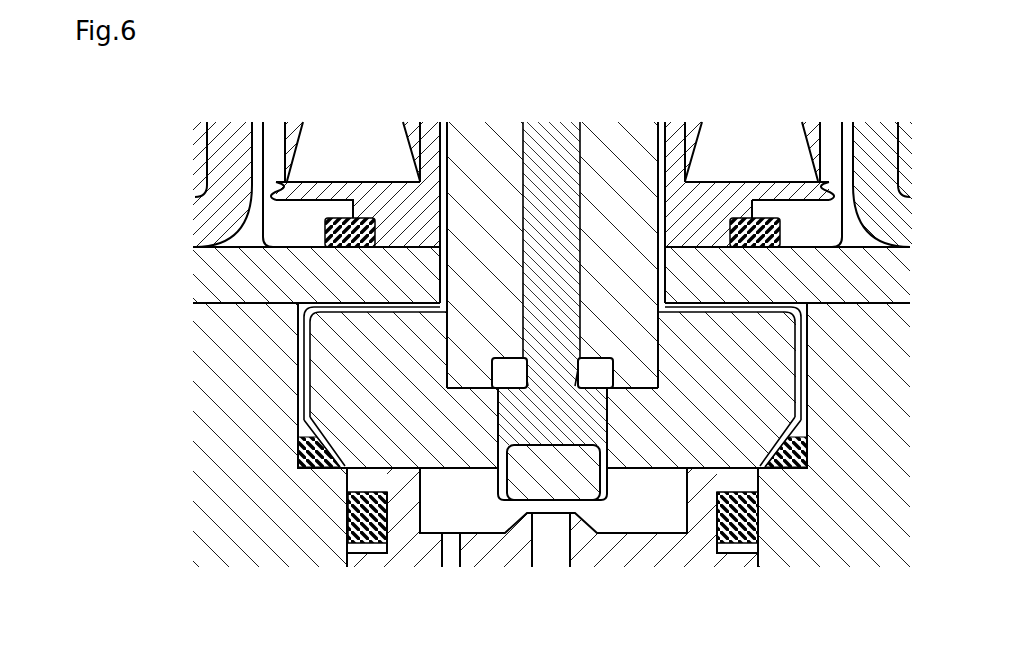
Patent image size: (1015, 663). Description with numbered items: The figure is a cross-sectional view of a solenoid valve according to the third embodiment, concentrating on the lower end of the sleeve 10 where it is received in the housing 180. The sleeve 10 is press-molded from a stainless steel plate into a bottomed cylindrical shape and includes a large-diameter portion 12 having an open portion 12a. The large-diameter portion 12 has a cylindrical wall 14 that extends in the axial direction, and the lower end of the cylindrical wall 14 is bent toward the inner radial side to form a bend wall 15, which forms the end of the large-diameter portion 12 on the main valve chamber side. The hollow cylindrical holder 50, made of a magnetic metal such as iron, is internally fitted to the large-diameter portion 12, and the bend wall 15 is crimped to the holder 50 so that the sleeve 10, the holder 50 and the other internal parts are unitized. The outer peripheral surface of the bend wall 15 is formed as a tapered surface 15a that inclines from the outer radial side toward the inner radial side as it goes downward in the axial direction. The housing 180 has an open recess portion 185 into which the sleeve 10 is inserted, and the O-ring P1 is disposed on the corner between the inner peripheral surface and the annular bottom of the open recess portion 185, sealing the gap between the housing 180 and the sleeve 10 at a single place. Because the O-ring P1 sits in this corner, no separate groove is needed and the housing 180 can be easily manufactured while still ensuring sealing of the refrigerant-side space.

The sleeve 10 is at (672, 204).
The large-diameter portion 12 is at (774, 298).
The open portion 12a is at (328, 445).
The cylindrical wall 14 is at (808, 410).
The holder 50 is at (766, 357).
The bend wall 15 is at (762, 530).
The tapered surface 15a is at (812, 470).
The housing 180 is at (208, 352).
The open recess portion 185 is at (313, 375).
The O-ring P1 is at (807, 468).